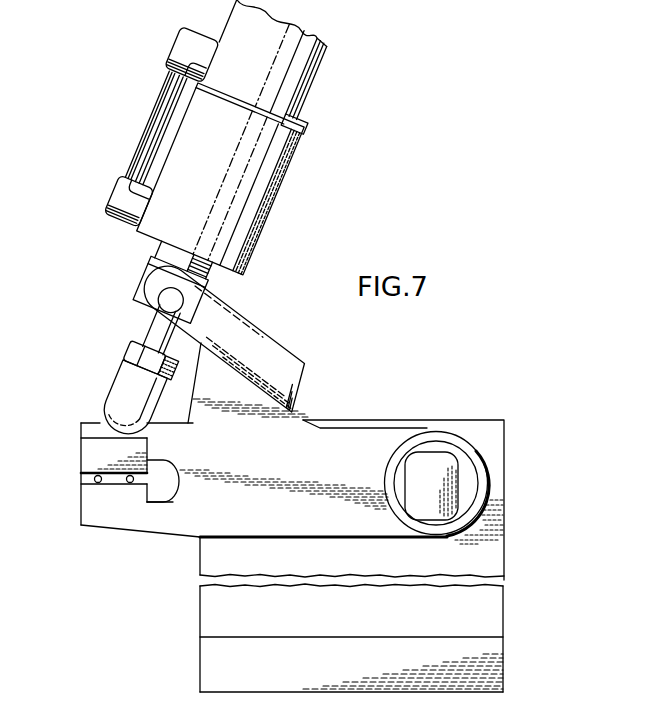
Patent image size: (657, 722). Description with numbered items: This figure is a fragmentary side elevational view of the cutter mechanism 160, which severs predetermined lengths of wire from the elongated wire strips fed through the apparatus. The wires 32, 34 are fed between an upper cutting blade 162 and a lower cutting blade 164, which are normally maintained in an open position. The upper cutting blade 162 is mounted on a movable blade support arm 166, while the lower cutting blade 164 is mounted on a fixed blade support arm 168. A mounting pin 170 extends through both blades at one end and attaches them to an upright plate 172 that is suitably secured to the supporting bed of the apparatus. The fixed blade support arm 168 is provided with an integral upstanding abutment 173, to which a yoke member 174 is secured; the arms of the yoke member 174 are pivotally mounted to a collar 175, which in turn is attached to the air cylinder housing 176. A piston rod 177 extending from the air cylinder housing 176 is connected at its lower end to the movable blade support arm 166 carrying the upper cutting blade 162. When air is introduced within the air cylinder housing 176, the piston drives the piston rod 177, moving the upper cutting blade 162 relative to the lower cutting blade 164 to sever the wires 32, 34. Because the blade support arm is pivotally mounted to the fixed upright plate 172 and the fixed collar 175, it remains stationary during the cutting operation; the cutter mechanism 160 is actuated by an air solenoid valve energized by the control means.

The cutter mechanism 160 is at (128, 104).
The air cylinder housing 176 is at (288, 157).
The collar 175 is at (147, 275).
The yoke member 174 is at (240, 335).
The piston rod 177 is at (152, 330).
The upstanding abutment 173 is at (283, 431).
The mounting pin 170 is at (432, 460).
The movable blade support arm 166 is at (92, 427).
The upper cutting blade 162 is at (90, 452).
The wire 34 is at (92, 479).
The wire 32 is at (130, 483).
The lower cutting blade 164 is at (98, 490).
The fixed blade support arm 168 is at (145, 523).
The upright plate 172 is at (208, 612).